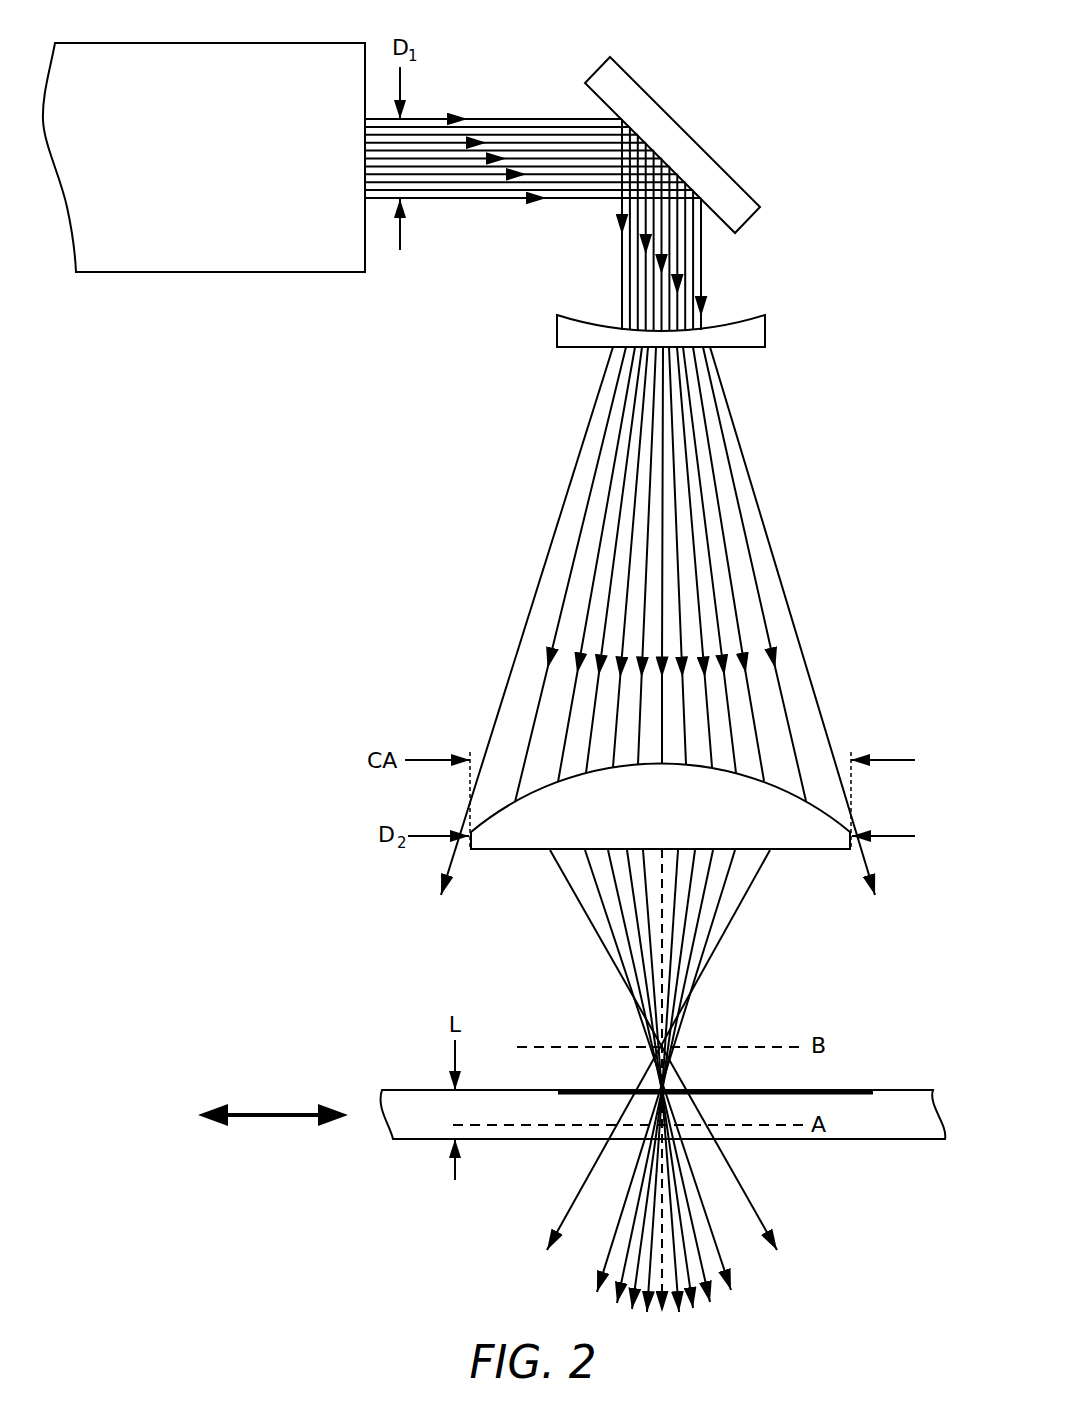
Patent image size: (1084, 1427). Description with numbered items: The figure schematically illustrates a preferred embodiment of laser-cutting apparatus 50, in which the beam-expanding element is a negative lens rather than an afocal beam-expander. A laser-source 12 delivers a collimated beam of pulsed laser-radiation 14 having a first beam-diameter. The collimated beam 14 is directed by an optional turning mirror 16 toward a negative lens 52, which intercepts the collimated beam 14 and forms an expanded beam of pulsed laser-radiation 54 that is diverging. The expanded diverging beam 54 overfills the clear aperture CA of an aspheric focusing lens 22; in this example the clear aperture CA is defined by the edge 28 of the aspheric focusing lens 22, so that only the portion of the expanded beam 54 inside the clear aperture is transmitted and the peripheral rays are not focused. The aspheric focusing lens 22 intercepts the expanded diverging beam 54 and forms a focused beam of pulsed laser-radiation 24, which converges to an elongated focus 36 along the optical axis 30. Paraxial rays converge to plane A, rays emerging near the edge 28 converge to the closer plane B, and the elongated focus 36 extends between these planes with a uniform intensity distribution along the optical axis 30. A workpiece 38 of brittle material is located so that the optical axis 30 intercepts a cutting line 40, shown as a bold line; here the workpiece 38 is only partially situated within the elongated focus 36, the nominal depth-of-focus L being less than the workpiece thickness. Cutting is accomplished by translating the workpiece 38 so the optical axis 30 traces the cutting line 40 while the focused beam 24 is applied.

The laser-source 12 is at (172, 264).
The collimated beam of pulsed laser-radiation 14 is at (538, 108).
The turning mirror 16 is at (702, 158).
The aspheric focusing lens 22 is at (805, 858).
The focused beam of pulsed laser-radiation 24 is at (597, 947).
The edge of aspheric focusing lens 28 is at (468, 845).
The optical axis 30 is at (663, 932).
The elongated focus 36 is at (672, 1105).
The workpiece 38 is at (905, 1088).
The cutting line 40 is at (857, 1088).
The laser-cutting apparatus 50 is at (245, 1203).
The negative lens 52 is at (758, 333).
The expanded beam of pulsed laser-radiation 54 is at (773, 542).